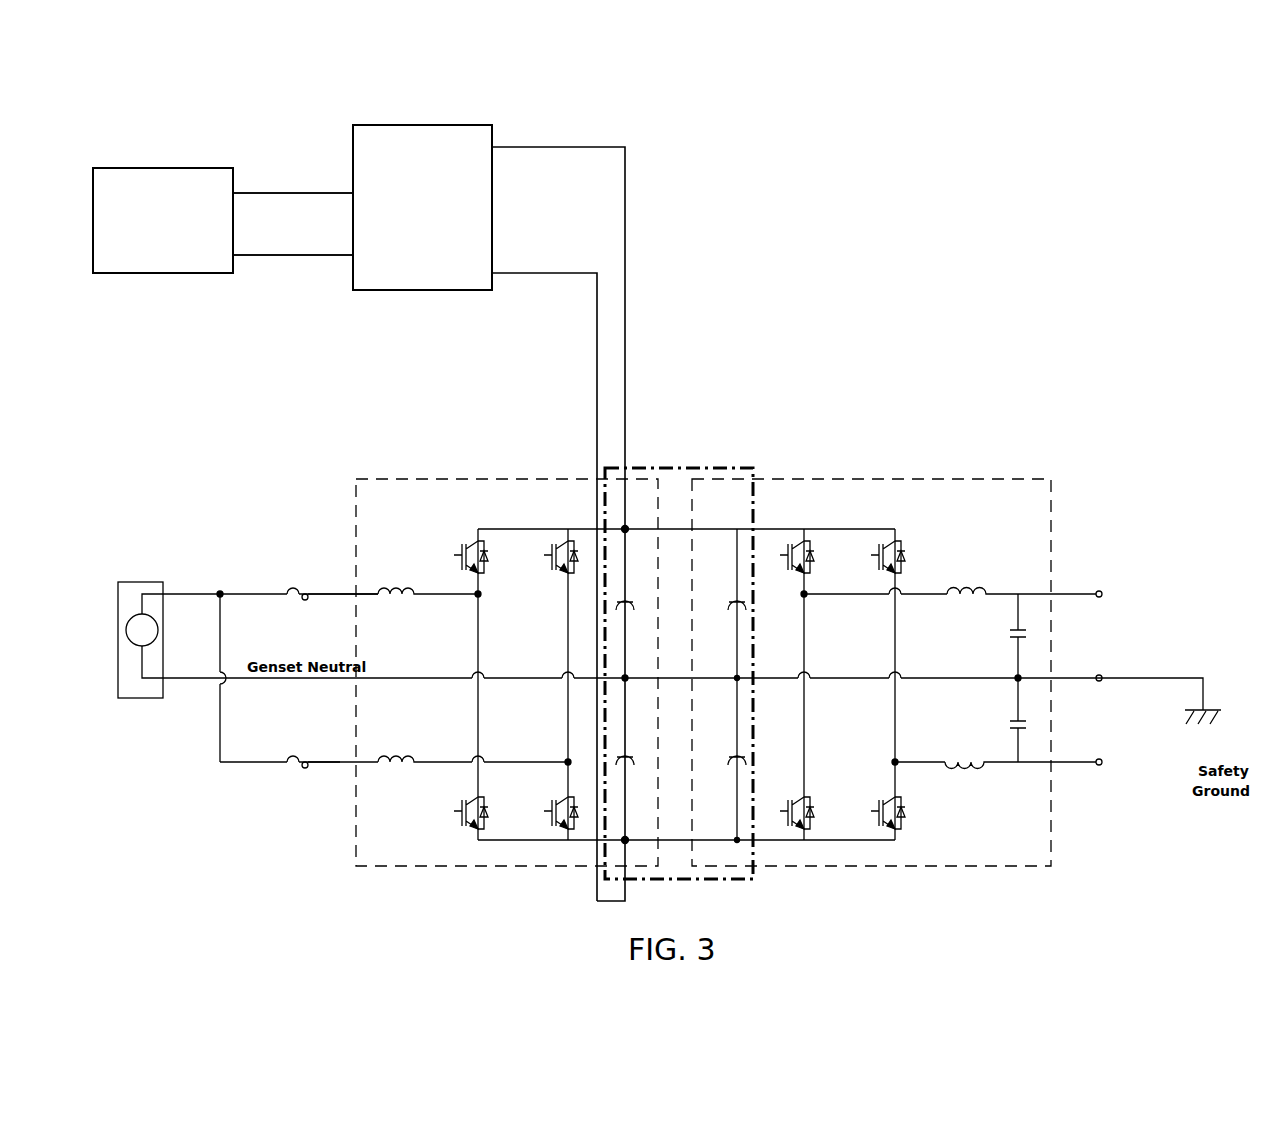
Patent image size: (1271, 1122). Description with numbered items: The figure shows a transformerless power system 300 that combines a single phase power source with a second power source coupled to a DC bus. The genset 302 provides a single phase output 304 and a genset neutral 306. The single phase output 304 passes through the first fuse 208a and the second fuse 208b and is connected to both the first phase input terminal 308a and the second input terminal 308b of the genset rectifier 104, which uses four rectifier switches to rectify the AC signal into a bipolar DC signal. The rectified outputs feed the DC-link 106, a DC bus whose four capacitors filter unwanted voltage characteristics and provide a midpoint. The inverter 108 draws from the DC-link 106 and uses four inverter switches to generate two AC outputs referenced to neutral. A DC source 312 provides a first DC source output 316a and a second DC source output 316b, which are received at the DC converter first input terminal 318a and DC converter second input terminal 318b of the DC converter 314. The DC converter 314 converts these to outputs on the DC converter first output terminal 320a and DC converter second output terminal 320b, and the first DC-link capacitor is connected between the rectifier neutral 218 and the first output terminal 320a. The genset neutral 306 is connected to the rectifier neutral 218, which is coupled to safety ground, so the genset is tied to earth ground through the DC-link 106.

The transformerless power system 300 is at (150, 64).
The DC source 312 is at (163, 220).
The DC converter 314 is at (422, 207).
The first DC source output 316a is at (240, 190).
The second DC source output 316b is at (240, 258).
The DC converter first input terminal 318a is at (349, 190).
The DC converter second input terminal 318b is at (349, 258).
The DC converter first output terminal 320a is at (500, 145).
The DC converter second output terminal 320b is at (500, 292).
The genset rectifier 104 is at (482, 478).
The DC-link 106 is at (707, 468).
The inverter 108 is at (975, 478).
The genset 302 is at (128, 616).
The single phase output 304 is at (188, 592).
The genset neutral 306 is at (196, 682).
The first phase input terminal 308a is at (338, 597).
The second input terminal 308b is at (341, 760).
The fuse 1 208a is at (303, 600).
The fuse 2 208b is at (292, 767).
The rectifier neutral 218 is at (1020, 676).